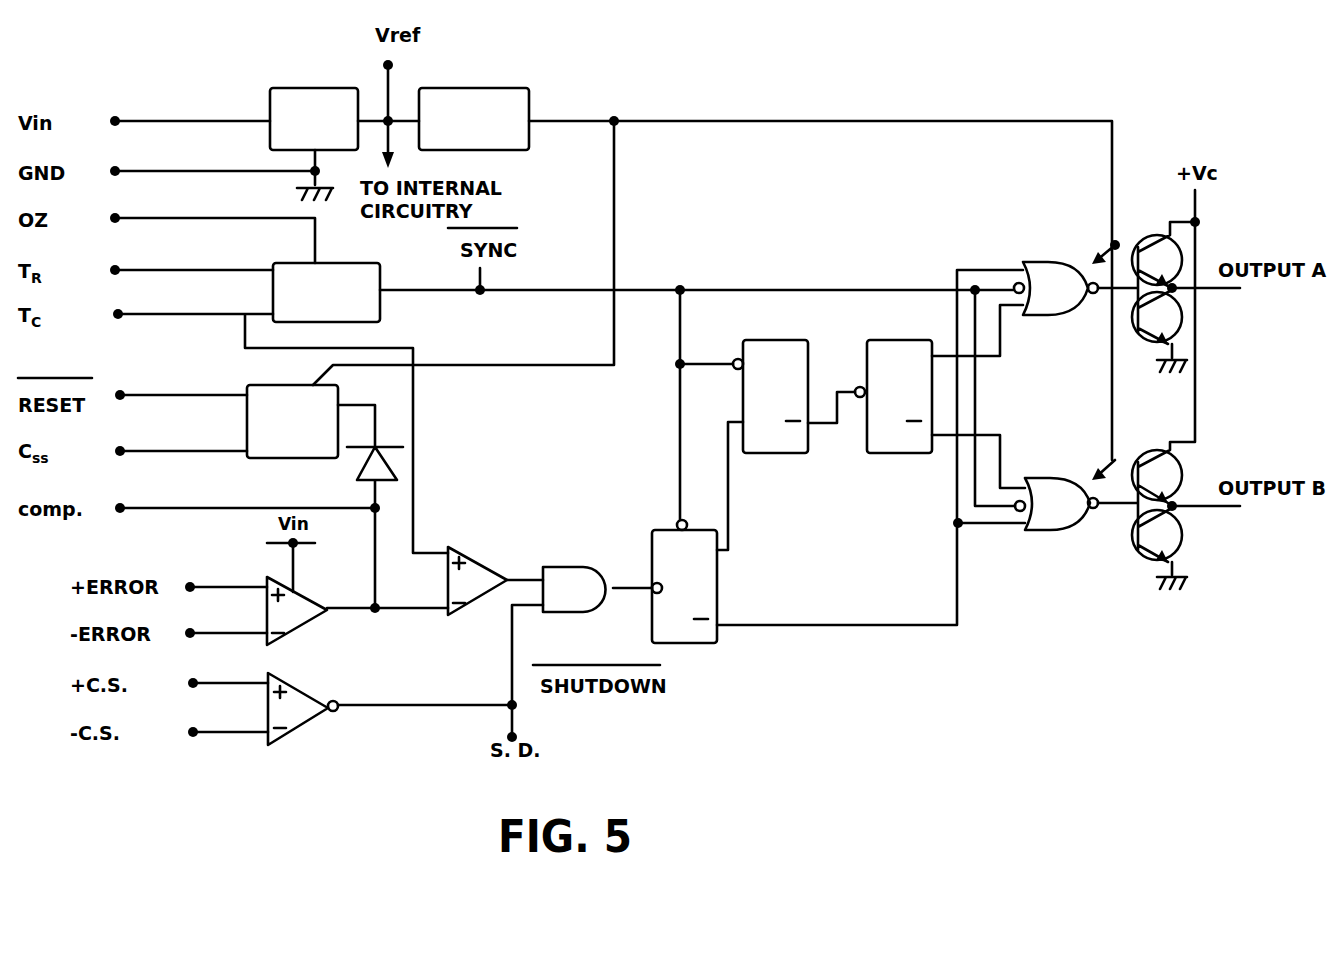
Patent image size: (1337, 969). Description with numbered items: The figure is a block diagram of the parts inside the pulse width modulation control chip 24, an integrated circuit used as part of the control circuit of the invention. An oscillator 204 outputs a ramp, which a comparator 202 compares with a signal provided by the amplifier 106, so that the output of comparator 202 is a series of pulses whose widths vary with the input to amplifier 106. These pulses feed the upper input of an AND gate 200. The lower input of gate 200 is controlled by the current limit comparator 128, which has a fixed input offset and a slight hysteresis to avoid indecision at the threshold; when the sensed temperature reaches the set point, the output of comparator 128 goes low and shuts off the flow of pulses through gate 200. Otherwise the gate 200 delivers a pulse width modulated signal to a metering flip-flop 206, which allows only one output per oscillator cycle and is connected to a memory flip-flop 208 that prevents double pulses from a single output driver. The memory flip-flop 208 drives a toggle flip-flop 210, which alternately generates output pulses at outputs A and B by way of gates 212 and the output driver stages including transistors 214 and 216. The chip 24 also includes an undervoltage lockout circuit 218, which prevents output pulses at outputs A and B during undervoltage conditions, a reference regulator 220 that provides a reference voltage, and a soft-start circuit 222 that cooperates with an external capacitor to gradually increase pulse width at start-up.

The control circuit chip 24 is at (805, 230).
The amplifier 106 is at (293, 590).
The comparator 128 is at (310, 722).
The AND gate 200 is at (568, 567).
The comparator 202 is at (470, 553).
The oscillator 204 is at (335, 262).
The metering flip-flop 206 is at (720, 603).
The memory flip-flop 208 is at (765, 340).
The toggle flip-flop 210 is at (920, 340).
The gates 212 is at (1070, 222).
The transistor 214 is at (1138, 240).
The transistor 216 is at (1140, 338).
The undervoltage lockout circuit 218 is at (455, 88).
The reference regulator 220 is at (290, 88).
The soft-start circuit 222 is at (262, 385).